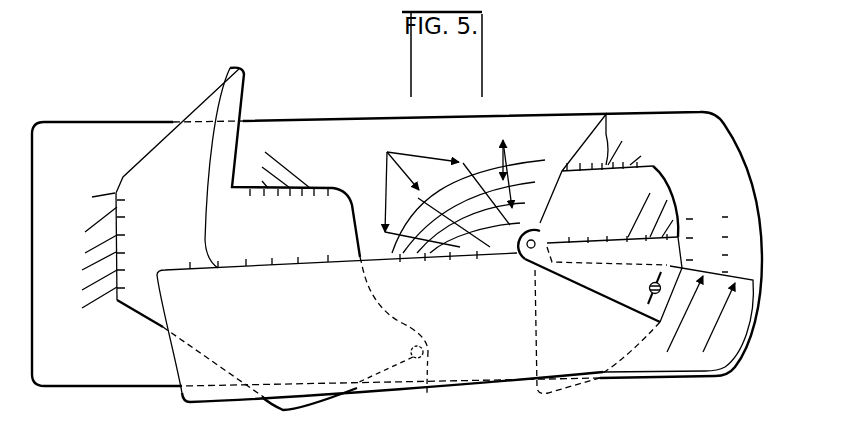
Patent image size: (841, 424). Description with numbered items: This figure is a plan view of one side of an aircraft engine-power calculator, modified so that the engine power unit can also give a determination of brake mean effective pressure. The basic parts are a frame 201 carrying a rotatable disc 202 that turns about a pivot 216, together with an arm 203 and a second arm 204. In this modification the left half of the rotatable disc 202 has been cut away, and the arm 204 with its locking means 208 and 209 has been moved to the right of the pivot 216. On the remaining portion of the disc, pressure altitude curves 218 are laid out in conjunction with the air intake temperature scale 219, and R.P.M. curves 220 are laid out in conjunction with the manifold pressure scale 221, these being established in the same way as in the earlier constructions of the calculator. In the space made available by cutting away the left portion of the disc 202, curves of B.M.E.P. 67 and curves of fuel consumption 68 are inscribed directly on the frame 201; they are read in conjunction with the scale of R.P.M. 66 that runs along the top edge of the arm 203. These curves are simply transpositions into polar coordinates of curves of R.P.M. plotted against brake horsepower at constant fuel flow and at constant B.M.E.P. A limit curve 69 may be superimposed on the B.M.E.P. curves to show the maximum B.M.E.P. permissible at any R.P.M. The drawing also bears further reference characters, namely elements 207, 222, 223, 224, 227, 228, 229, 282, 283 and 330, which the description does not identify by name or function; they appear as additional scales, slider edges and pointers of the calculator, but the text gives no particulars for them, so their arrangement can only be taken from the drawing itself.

The frame 201 is at (728, 133).
The rotatable disc 202 is at (662, 180).
The arm 203 is at (728, 352).
The arm 204 is at (602, 303).
The diagonal edge of air speed slider 207 is at (192, 104).
The locking means 208 is at (657, 275).
The locking means 209 is at (639, 292).
The pivot 216 is at (548, 239).
The pressure altitude curves 218 is at (607, 113).
The air intake temperature scale 219 is at (602, 187).
The R.P.M. curves 220 is at (645, 223).
The manifold pressure scale 221 is at (612, 259).
The horse power and percent rated power pointers 222 is at (698, 292).
The horse power scales 223 is at (713, 231).
The true air speed scale 224 is at (264, 273).
The outside air temperature slider tab 227 is at (227, 93).
The hidden lower end of slider 228 is at (428, 392).
The true air speed slider 229 is at (135, 245).
The outside air temperature scale 282 is at (280, 215).
The pressure altitude lines 283 is at (285, 173).
The indicated air speed scale 330 is at (95, 217).
The scale of R.P.M. 66 is at (462, 272).
The B.M.E.P. curves 67 is at (508, 143).
The fuel consumption curves 68 is at (388, 153).
The limit curve 69 is at (523, 190).